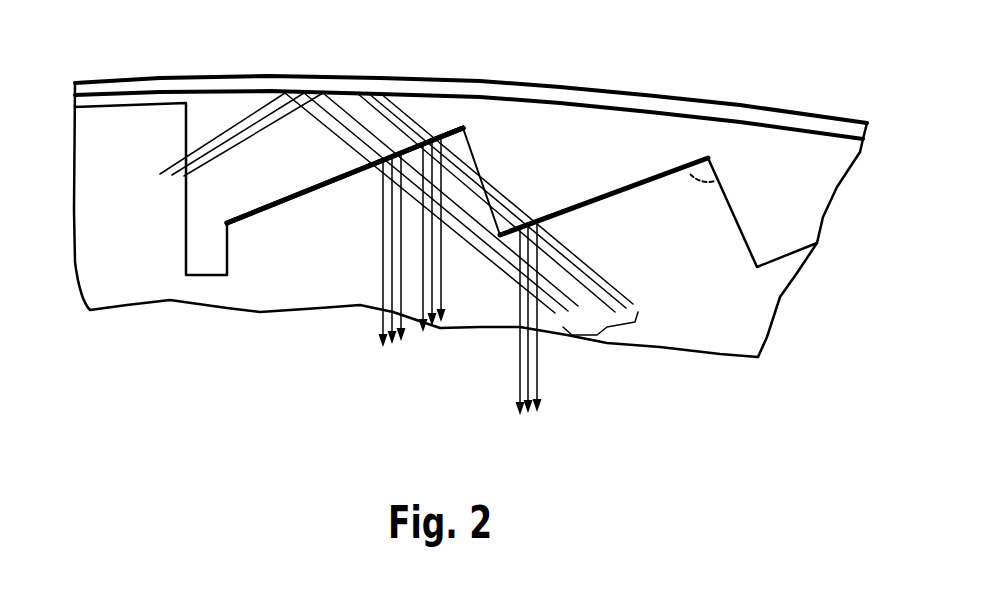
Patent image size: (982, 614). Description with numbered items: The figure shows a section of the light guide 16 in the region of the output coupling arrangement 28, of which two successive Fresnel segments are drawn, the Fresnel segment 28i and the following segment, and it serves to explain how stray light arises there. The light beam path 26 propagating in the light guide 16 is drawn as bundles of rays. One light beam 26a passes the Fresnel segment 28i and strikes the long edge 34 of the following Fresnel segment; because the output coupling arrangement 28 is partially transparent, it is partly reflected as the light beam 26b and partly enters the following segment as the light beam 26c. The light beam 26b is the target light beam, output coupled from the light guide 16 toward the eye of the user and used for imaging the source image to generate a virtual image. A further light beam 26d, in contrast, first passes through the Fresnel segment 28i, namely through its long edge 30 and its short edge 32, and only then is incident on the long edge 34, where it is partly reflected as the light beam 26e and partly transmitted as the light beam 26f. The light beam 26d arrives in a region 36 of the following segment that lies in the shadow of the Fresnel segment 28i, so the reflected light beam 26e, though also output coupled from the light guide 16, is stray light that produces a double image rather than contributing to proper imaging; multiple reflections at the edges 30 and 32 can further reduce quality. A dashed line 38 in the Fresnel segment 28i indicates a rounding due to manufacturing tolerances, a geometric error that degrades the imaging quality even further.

The light guide 16 is at (758, 307).
The light beam path 26 is at (508, 193).
The light beam 26a is at (473, 247).
The light beam 26b is at (383, 280).
The light beam 26c is at (328, 125).
The light beam 26d is at (605, 281).
The light beam 26e is at (423, 245).
The light beam 26f is at (412, 108).
The output coupling arrangement 28 is at (579, 151).
The Fresnel segment 28i is at (688, 158).
The long edge 30 is at (623, 187).
The short edge 32 is at (470, 142).
The long edge 34 is at (253, 207).
The shadowed region 36 is at (460, 128).
The dashed line 38 is at (713, 170).